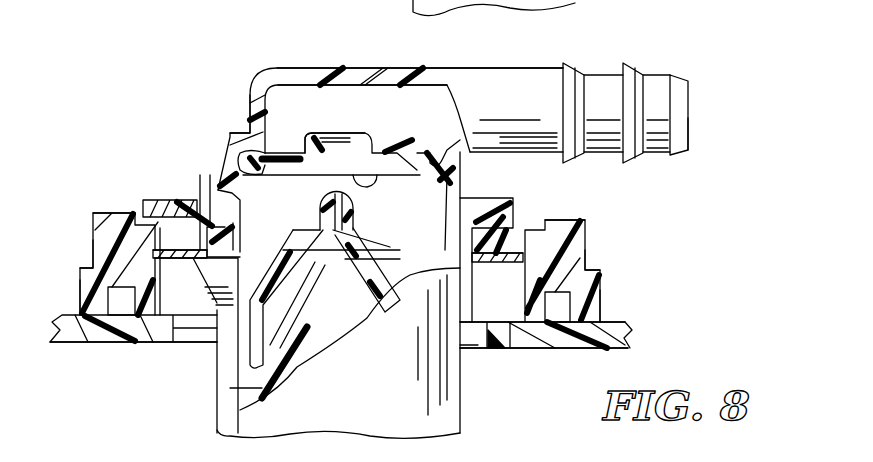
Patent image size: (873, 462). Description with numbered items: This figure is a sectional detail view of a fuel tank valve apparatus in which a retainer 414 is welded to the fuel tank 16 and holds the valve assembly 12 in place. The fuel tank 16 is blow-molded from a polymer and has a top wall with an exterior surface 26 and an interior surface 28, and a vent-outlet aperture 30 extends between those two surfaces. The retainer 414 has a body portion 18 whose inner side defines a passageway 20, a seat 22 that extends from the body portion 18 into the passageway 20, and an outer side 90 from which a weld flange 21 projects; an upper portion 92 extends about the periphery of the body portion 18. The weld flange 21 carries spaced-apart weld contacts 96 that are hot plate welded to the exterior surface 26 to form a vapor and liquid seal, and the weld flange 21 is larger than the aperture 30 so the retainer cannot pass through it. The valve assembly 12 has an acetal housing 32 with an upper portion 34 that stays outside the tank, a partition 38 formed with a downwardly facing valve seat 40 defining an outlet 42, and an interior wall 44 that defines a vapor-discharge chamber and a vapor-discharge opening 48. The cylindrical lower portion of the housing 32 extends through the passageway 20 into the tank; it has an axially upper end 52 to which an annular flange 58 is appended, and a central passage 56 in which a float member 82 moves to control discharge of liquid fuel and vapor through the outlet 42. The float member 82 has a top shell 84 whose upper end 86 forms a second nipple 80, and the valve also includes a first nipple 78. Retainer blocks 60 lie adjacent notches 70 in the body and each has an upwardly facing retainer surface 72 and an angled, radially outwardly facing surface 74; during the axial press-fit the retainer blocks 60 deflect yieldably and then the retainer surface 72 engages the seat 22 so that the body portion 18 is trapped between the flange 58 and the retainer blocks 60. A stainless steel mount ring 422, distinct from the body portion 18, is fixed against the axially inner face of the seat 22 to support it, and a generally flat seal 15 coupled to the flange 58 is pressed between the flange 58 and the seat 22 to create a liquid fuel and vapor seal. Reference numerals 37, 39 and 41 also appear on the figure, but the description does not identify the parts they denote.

The valve assembly 12 is at (215, 108).
The seal 15 is at (188, 217).
The fuel tank 16 is at (635, 334).
The body portion 18 is at (93, 223).
The passageway 20 is at (504, 328).
The weld flange 21 is at (76, 280).
The seat 22 is at (165, 215).
The exterior surface 26 is at (627, 322).
The interior surface 28 is at (107, 343).
The vent-outlet aperture 30 is at (478, 341).
The housing 32 is at (677, 69).
The upper portion 34 is at (520, 67).
The housing step 37 is at (238, 132).
The partition 38 is at (290, 142).
The housing top wall 39 is at (278, 70).
The valve seat 40 is at (370, 185).
The barb 41 is at (534, 85).
The outlet 42 is at (350, 127).
The interior wall 44 is at (393, 78).
The vapor-discharge opening 48 is at (690, 135).
The axially upper end 52 is at (458, 193).
The central passage 56 is at (233, 187).
The flange 58 is at (163, 200).
The retainer blocks 60 is at (218, 377).
The notches 70 is at (238, 244).
The retainer surface 72 is at (233, 253).
The angled, radially outwardly facing surface 74 is at (208, 285).
The first nipple 78 is at (355, 205).
The second nipple 80 is at (343, 252).
The float member 82 is at (257, 407).
The top shell 84 is at (368, 316).
The upper end 86 is at (338, 270).
The outer side 90 is at (600, 257).
The upper portion 92 is at (127, 212).
The contacts 96 is at (84, 317).
The retainer 414 is at (109, 199).
The mount ring 422 is at (178, 262).